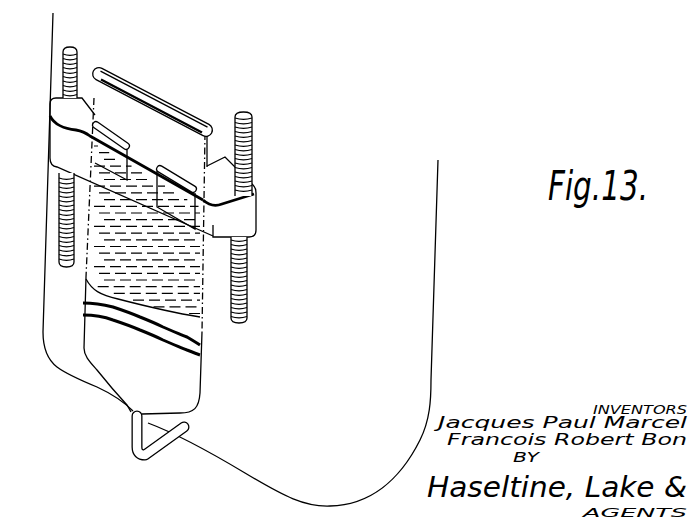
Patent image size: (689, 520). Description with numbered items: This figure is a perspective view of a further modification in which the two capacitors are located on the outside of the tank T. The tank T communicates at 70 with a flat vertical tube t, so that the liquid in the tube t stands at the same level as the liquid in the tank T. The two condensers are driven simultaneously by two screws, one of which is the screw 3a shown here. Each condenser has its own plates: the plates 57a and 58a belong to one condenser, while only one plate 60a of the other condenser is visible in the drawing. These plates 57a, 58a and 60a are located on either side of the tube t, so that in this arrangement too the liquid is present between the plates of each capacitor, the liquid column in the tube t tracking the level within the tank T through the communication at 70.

The tank T is at (397, 220).
The flat vertical tube t is at (165, 106).
The screw 3a is at (60, 241).
The plate 57a is at (170, 183).
The plate 58a is at (210, 162).
The plate 60a is at (94, 163).
The communication point 70 is at (160, 447).